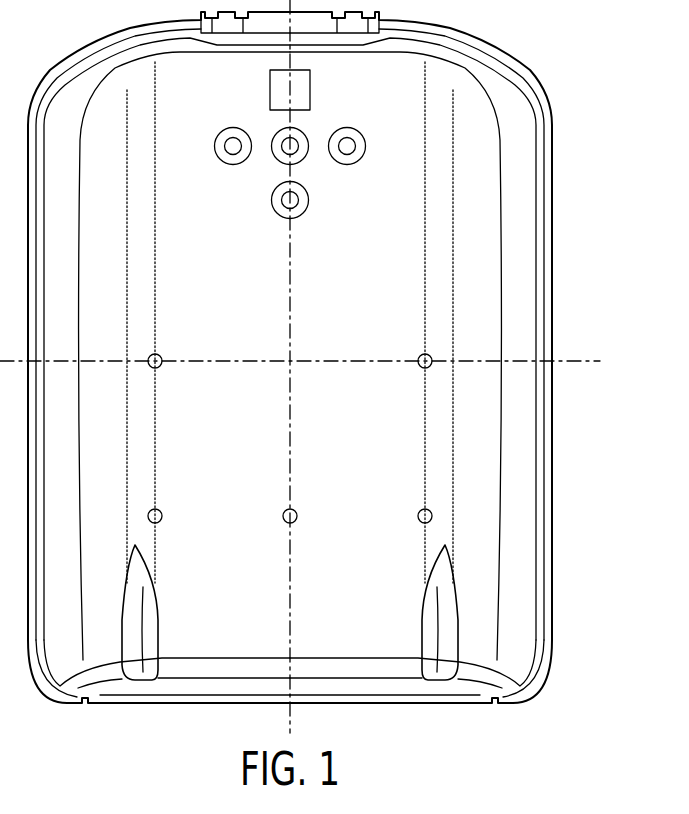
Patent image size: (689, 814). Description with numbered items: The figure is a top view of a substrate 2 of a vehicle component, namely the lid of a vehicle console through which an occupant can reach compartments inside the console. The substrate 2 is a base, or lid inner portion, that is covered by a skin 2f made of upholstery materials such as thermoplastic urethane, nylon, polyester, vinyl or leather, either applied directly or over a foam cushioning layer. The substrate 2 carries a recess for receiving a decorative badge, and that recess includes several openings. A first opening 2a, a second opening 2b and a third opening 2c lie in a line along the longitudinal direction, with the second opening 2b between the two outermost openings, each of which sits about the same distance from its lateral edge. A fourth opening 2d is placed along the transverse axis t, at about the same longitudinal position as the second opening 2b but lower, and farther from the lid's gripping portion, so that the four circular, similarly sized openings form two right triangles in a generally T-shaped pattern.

The substrate 2 is at (440, 223).
The first opening 2a is at (231, 146).
The second opening 2b is at (286, 143).
The third opening 2c is at (350, 144).
The fourth opening 2d is at (286, 198).
The skin 2f is at (308, 172).
The transverse axis t is at (593, 358).